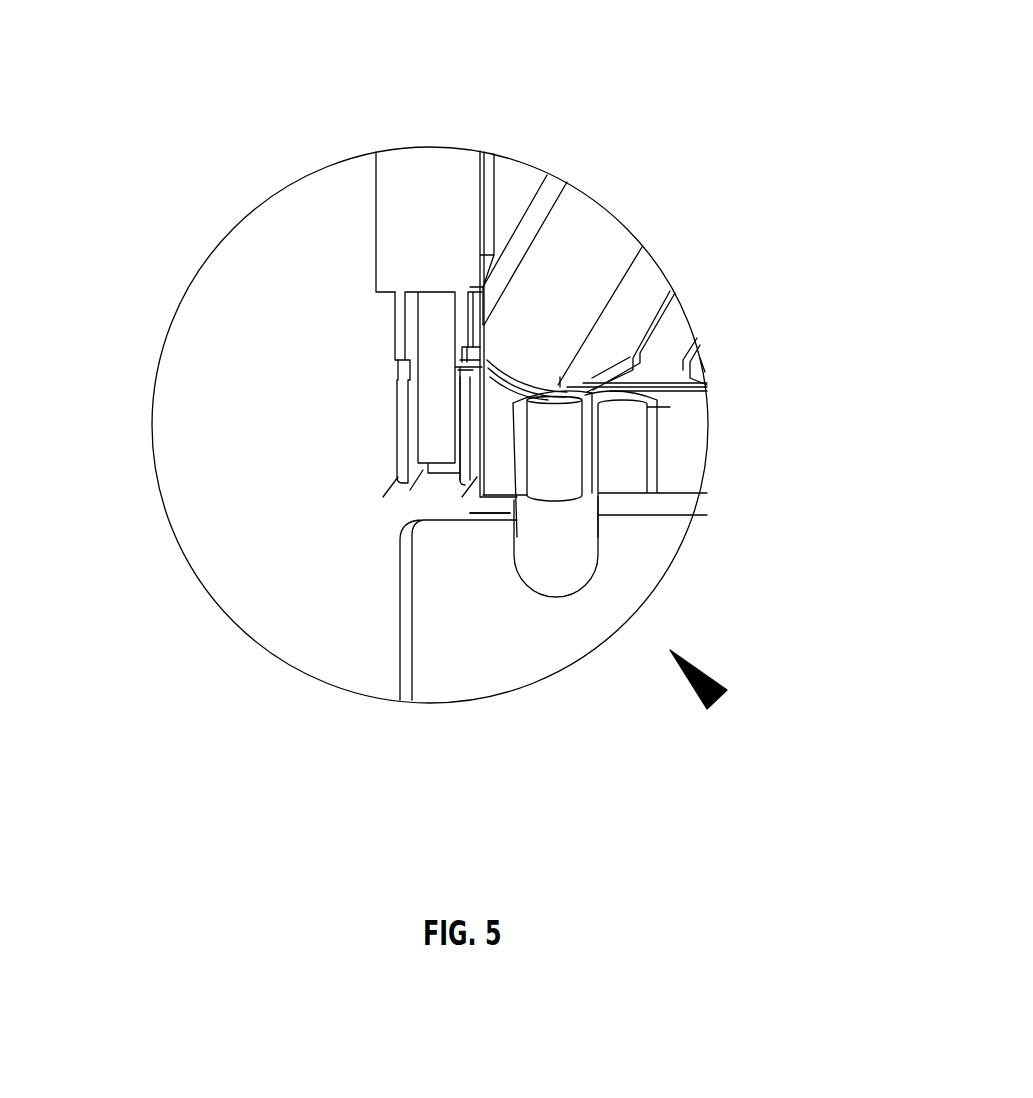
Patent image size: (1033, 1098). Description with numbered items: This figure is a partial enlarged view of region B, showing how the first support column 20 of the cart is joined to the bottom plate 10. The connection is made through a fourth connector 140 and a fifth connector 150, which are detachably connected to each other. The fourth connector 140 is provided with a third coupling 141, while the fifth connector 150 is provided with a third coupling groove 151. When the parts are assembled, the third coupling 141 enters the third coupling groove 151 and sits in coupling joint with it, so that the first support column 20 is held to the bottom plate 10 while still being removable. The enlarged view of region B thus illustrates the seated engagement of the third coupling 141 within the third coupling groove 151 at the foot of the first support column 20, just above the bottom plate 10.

The bottom plate 10 is at (558, 452).
The first support column 20 is at (423, 207).
The fourth connector 140 is at (413, 333).
The third coupling 141 is at (465, 362).
The fifth connector 150 is at (498, 437).
The third coupling groove 151 is at (485, 325).
The region B is at (717, 700).